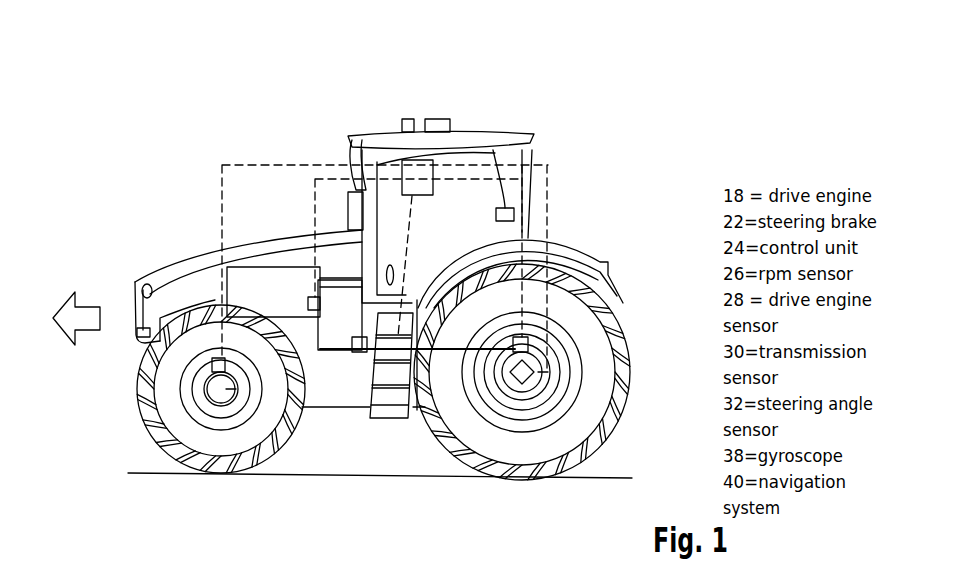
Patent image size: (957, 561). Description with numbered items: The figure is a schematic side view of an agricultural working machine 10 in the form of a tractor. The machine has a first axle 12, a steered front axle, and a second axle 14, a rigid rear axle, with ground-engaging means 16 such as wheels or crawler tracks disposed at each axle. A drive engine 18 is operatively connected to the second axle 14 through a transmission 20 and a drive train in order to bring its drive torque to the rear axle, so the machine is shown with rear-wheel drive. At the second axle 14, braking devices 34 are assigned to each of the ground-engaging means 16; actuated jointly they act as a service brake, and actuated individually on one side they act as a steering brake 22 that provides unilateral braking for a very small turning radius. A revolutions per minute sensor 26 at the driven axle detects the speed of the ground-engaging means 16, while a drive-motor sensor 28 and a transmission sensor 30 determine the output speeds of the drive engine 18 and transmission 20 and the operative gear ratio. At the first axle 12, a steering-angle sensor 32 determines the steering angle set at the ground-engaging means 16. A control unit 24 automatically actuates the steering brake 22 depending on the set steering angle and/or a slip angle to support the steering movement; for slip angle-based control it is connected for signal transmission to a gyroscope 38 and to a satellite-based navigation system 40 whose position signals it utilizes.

The agricultural working machine 10 is at (606, 105).
The first axle 12 is at (214, 392).
The second axle 14 is at (521, 390).
The ground-engaging means 16 is at (227, 435).
The drive engine 18 is at (255, 290).
The transmission 20 is at (345, 336).
The steering brake 22 is at (604, 379).
The control unit 24 is at (418, 184).
The revolutions per minute sensor 26 is at (538, 340).
The drive-motor sensor 28 is at (307, 298).
The transmission sensor 30 is at (360, 352).
The steering-angle sensor 32 is at (205, 358).
The braking devices 34 is at (540, 386).
The gyroscope 38 is at (406, 119).
The navigation system 40 is at (437, 119).